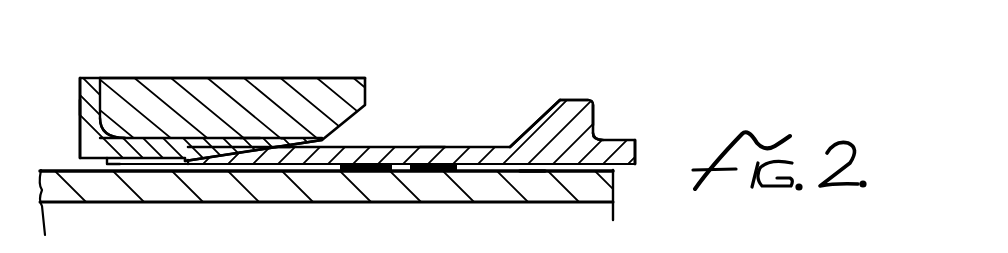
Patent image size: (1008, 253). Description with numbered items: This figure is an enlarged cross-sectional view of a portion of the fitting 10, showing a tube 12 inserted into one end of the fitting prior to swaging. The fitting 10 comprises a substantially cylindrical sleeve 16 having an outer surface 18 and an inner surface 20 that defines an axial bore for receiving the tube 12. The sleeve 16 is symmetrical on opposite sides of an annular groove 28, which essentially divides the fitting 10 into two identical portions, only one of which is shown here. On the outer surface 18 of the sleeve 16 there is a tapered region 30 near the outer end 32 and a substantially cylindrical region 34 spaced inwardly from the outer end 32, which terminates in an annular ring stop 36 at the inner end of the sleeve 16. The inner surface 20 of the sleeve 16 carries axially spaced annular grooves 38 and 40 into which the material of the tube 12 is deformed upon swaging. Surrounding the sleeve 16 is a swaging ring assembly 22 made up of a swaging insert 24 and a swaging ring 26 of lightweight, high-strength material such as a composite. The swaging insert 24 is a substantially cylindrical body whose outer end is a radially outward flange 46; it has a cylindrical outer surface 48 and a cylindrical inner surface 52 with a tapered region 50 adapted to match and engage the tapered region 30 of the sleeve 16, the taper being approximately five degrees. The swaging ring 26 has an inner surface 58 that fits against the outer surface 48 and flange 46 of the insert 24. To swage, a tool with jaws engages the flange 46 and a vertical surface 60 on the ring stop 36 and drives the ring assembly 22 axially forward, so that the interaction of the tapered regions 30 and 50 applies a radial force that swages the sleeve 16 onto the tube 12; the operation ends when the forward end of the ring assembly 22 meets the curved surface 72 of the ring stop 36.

The fitting 10 is at (607, 72).
The tube 12 is at (50, 170).
The sleeve 16 is at (643, 150).
The outer surface 18 is at (380, 147).
The inner surface 20 is at (530, 172).
The swaging ring assembly 22 is at (146, 54).
The swaging insert 24 is at (88, 77).
The swaging ring 26 is at (289, 78).
The annular groove 28 is at (620, 140).
The tapered region 30 is at (245, 156).
The outer end 32 is at (181, 160).
The cylindrical region 34 is at (430, 147).
The ring stop 36 is at (570, 100).
The annular groove 38 is at (367, 167).
The annular groove 40 is at (428, 168).
The flange 46 is at (80, 107).
The outer surface 48 is at (137, 137).
The tapered region 50 is at (200, 166).
The inner surface 52 is at (100, 163).
The inner surface 58 is at (281, 163).
The vertical surface 60 is at (603, 101).
The curved surface 72 is at (537, 133).